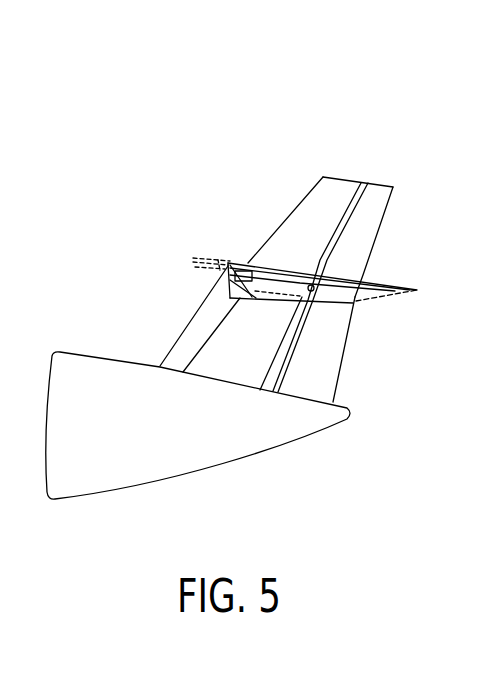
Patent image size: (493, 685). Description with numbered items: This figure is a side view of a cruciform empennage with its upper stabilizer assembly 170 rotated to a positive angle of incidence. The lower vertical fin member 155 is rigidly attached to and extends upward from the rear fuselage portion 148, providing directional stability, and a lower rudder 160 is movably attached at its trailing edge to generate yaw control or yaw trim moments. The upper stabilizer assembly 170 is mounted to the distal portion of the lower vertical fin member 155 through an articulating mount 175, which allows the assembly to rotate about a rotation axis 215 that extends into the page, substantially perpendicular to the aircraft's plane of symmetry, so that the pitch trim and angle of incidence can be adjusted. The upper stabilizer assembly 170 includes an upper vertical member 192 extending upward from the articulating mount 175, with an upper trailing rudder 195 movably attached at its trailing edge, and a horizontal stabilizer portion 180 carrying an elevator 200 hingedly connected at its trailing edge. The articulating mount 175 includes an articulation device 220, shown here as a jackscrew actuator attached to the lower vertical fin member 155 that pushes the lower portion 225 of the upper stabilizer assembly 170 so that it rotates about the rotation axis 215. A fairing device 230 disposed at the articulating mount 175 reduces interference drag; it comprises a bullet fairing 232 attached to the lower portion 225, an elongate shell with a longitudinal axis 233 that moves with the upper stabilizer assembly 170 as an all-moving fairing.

The rear fuselage portion 148 is at (160, 463).
The lower vertical fin member 155 is at (225, 345).
The lower rudder 160 is at (323, 377).
The upper stabilizer assembly 170 is at (393, 113).
The articulating mount 175 is at (234, 170).
The horizontal stabilizer portion 180 is at (347, 268).
The upper vertical member 192 is at (338, 193).
The upper trailing rudder 195 is at (370, 207).
The elevator 200 is at (405, 283).
The rotation axis 215 is at (313, 290).
The articulation device 220 is at (222, 310).
The lower portion of upper stabilizer assembly 225 is at (283, 250).
The fairing device 230 is at (202, 242).
The bullet fairing 232 is at (195, 259).
The longitudinal axis 233 is at (227, 257).